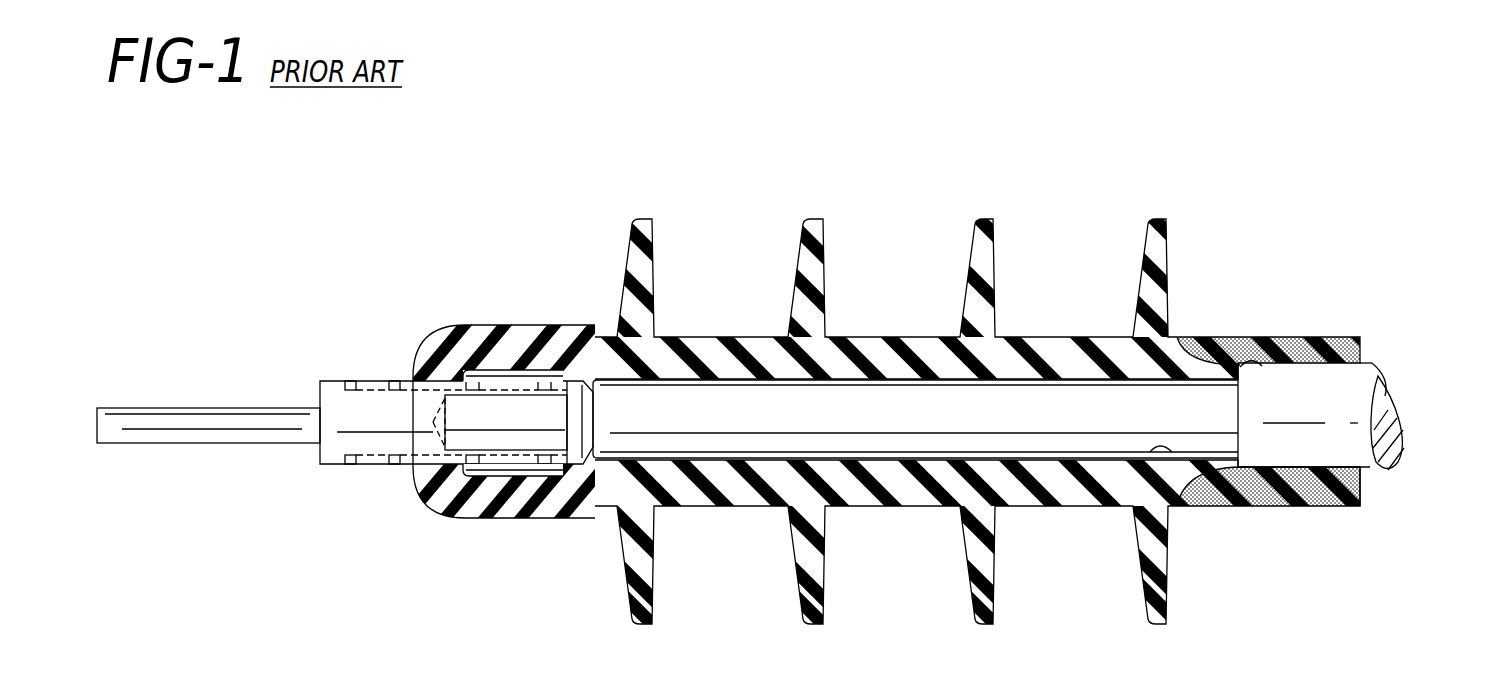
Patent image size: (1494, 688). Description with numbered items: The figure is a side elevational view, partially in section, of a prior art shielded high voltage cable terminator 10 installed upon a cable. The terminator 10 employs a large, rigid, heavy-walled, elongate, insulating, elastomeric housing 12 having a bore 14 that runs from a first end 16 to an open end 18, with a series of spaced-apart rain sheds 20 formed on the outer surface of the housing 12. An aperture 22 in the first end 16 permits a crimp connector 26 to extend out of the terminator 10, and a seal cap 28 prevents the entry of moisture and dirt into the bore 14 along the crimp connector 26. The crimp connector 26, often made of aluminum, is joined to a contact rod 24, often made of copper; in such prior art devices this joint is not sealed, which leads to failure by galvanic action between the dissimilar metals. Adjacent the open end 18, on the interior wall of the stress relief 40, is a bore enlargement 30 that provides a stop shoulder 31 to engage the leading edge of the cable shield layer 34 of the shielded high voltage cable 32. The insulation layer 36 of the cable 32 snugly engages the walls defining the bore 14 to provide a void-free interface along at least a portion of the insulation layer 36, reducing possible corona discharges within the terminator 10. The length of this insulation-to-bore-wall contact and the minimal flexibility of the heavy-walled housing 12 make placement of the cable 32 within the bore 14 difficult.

The terminator 10 is at (982, 102).
The housing 12 is at (727, 338).
The bore 14 is at (1160, 447).
The first end 16 is at (573, 470).
The open end 18 is at (1363, 345).
The rain sheds 20 is at (966, 252).
The aperture 22 is at (556, 365).
The contact rod 24 is at (211, 415).
The crimp connector 26 is at (358, 420).
The seal cap 28 is at (470, 335).
The bore enlargement 30 is at (1312, 468).
The stop shoulder 31 is at (1250, 360).
The shielded high voltage cable 32 is at (1370, 480).
The cable shield layer 34 is at (1362, 413).
The insulation layer 36 is at (910, 438).
The stress relief 40 is at (1234, 333).